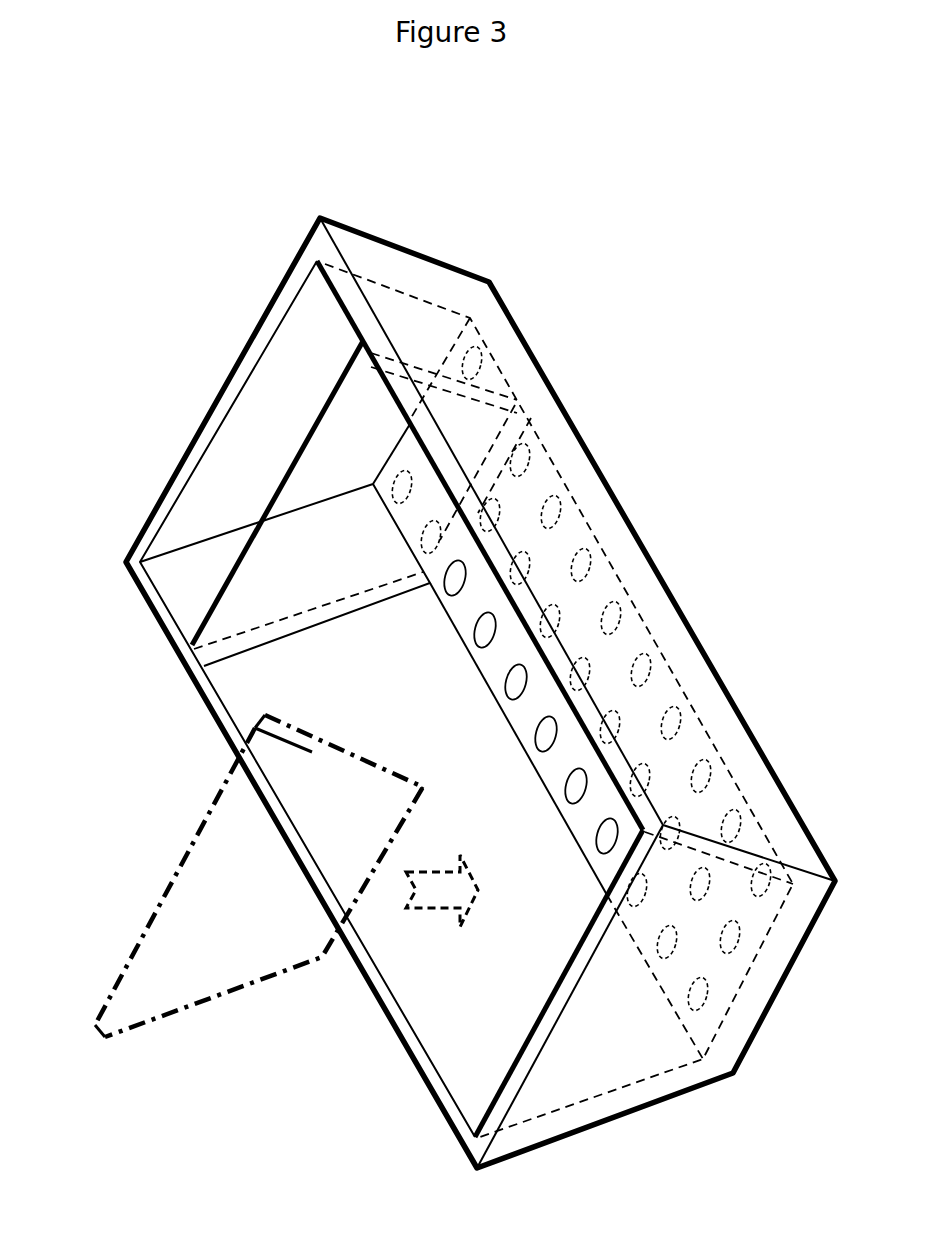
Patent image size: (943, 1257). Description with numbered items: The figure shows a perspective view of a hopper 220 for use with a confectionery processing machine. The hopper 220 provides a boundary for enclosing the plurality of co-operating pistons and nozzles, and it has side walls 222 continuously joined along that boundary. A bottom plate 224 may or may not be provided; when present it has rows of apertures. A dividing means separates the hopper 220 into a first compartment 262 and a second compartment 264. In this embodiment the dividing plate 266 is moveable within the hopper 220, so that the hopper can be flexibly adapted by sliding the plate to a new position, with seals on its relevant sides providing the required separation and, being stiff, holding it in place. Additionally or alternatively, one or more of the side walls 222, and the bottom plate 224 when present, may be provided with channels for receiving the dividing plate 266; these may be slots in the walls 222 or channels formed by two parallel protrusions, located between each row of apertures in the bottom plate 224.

The hopper 220 is at (434, 693).
The side walls 222 is at (263, 338).
The bottom plate 224 is at (590, 818).
The first compartment 262 is at (277, 493).
The second compartment 264 is at (331, 592).
The dividing plate 266 is at (313, 695).